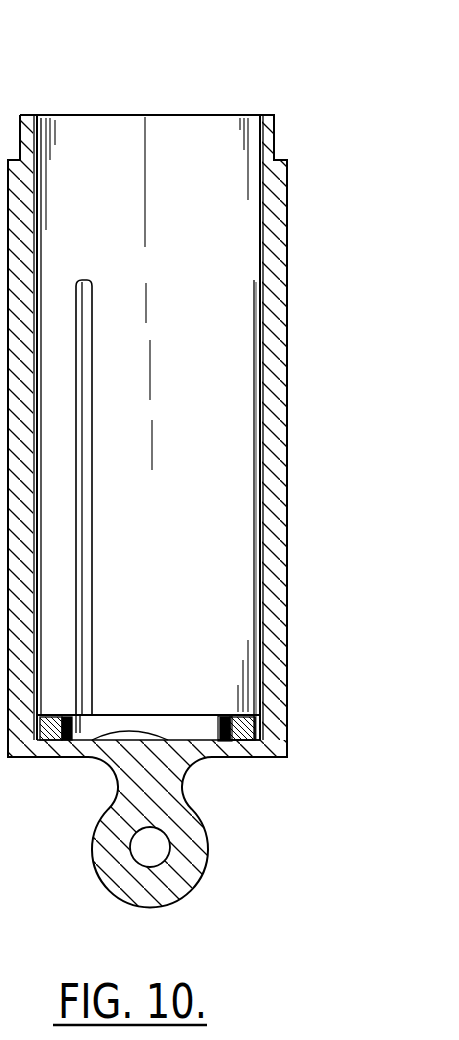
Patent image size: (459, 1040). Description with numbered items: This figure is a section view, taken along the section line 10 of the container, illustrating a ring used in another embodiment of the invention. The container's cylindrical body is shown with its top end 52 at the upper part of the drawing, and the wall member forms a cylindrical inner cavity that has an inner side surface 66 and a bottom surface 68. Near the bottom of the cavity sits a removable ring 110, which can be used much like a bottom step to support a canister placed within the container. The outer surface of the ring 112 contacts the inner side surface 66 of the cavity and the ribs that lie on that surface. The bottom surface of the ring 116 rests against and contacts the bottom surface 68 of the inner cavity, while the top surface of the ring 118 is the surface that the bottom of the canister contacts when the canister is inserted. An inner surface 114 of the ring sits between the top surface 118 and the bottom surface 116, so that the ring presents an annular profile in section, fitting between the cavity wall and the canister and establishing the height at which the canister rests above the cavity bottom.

The section line 10 is at (147, 486).
The top end 52 is at (101, 108).
The inner side surface 66 is at (258, 298).
The bottom surface 68 is at (84, 742).
The removable ring 110 is at (228, 712).
The outer surface of the ring 112 is at (256, 720).
The inner surface 114 is at (224, 718).
The bottom surface of the ring 116 is at (233, 742).
The top surface of the ring 118 is at (238, 712).